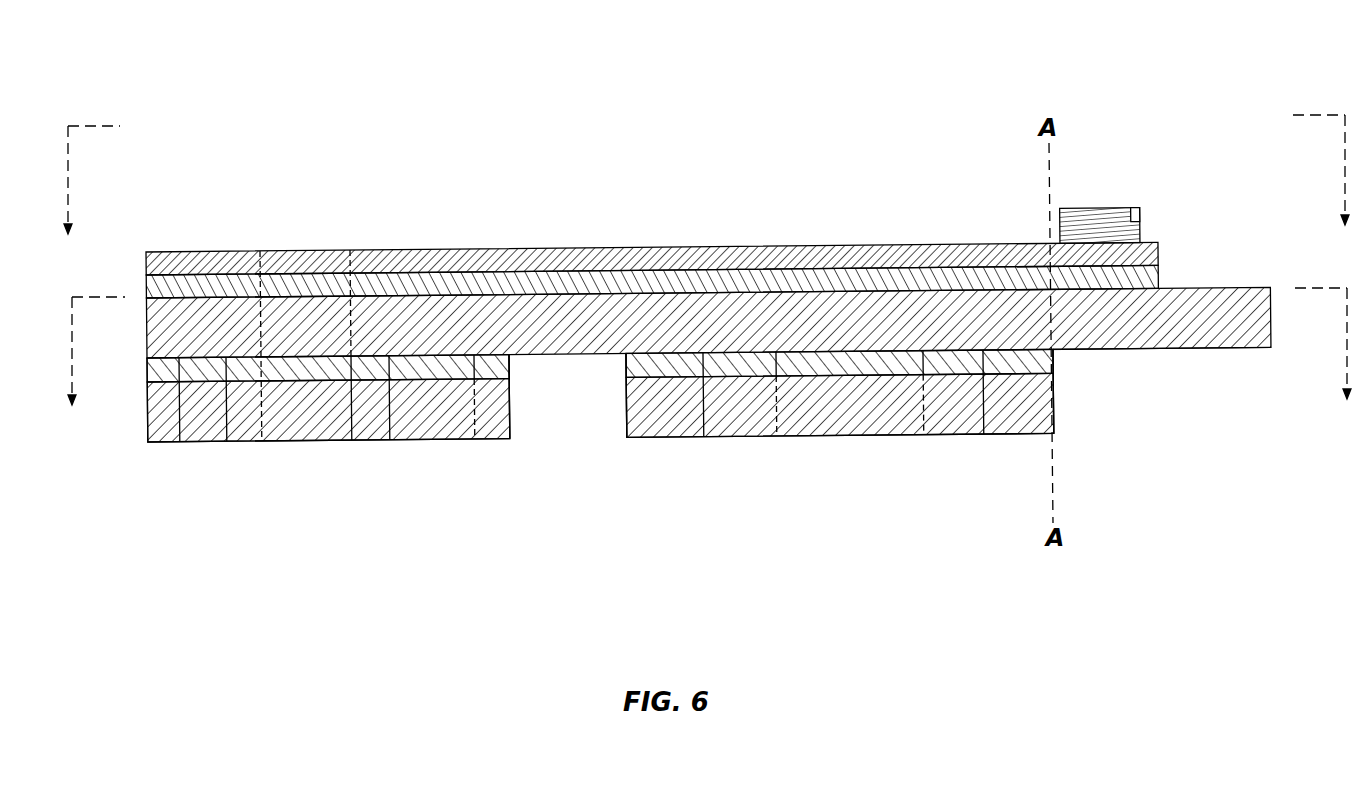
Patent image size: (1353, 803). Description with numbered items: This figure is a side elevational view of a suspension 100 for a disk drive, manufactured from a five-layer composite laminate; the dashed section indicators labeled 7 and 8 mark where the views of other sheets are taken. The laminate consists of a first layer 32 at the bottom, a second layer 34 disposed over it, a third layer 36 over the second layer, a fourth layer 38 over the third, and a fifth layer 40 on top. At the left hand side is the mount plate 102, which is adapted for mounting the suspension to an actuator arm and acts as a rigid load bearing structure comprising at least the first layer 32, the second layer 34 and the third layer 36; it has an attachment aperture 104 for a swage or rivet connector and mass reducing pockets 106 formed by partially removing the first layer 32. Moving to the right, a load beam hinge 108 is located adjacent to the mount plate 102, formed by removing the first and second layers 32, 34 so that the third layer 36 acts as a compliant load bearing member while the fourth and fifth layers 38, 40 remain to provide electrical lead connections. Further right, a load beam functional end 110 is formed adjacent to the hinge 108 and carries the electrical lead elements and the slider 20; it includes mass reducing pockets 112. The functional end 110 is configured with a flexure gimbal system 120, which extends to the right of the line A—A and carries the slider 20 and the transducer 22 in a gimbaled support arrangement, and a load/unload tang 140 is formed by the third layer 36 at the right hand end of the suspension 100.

The suspension 100 is at (711, 352).
The mount plate 102 is at (601, 441).
The attachment aperture 104 is at (343, 282).
The mass reducing pockets 106 is at (229, 440).
The load beam hinge 108 is at (578, 456).
The load beam functional end 110 is at (601, 511).
The mass reducing pockets 112 is at (773, 420).
The flexure gimbal system 120 is at (1098, 403).
The load/unload tang 140 is at (1193, 349).
The slider 20 is at (1077, 217).
The transducer 22 is at (1138, 217).
The first layer 32 is at (899, 431).
The second layer 34 is at (797, 378).
The third layer 36 is at (797, 335).
The fourth layer 38 is at (702, 277).
The fifth layer 40 is at (600, 256).
The section line 7 is at (708, 363).
The section line 8 is at (707, 193).